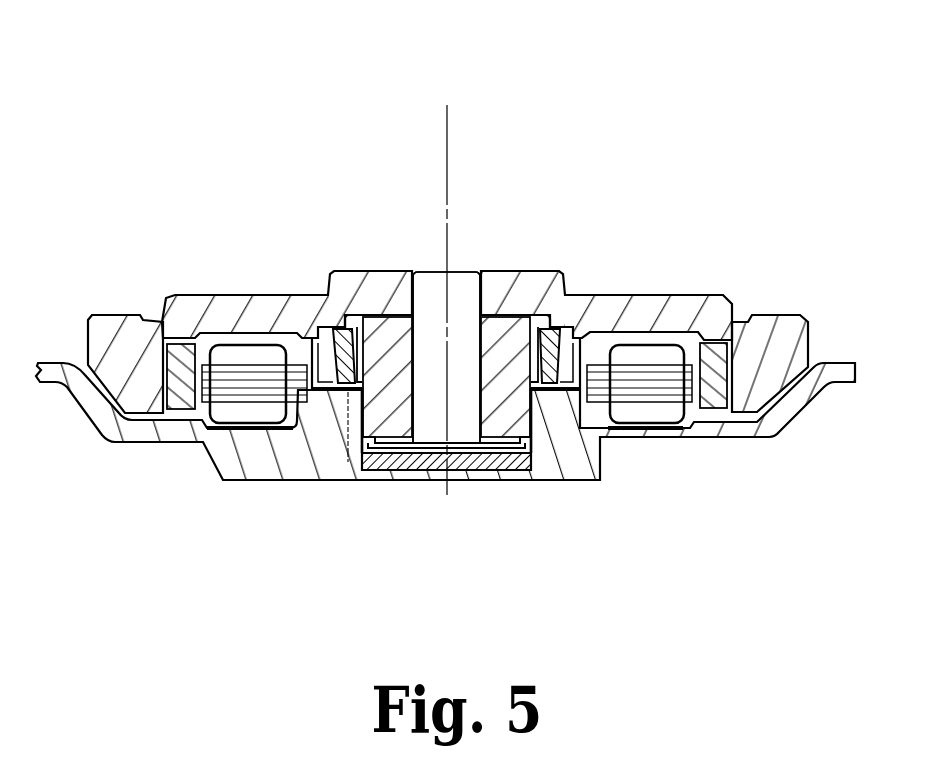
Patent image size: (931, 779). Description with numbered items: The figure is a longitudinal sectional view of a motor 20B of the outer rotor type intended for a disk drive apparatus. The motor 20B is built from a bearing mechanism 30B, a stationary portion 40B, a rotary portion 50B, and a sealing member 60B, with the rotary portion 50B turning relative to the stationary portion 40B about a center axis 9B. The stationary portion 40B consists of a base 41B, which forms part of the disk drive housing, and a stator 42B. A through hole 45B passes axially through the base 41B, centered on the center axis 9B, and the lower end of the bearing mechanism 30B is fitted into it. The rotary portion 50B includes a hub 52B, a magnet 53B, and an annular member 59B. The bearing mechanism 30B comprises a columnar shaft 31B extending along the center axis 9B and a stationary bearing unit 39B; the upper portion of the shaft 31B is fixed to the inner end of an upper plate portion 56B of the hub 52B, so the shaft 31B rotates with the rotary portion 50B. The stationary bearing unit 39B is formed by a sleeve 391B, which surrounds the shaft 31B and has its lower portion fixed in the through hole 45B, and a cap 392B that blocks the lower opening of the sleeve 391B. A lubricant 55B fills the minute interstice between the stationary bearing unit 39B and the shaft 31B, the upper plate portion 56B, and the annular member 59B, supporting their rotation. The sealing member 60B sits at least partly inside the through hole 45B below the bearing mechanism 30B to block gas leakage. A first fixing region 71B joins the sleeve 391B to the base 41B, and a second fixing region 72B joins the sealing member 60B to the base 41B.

The motor 20B is at (503, 107).
The center axis 9B is at (447, 127).
The rotary portion 50B is at (100, 183).
The hub 52B is at (235, 307).
The magnet 53B is at (183, 347).
The upper plate portion 56B is at (362, 283).
The annular member 59B is at (318, 317).
The lubricant 55B is at (385, 318).
The through hole 45B is at (458, 395).
The bearing mechanism 30B is at (390, 591).
The stationary bearing unit 39B is at (358, 555).
The sleeve 391B is at (370, 445).
The cap 392B is at (393, 447).
The shaft 31B is at (458, 423).
The sealing member 60B is at (527, 443).
The stationary portion 40B is at (785, 203).
The base 41B is at (705, 428).
The stator 42B is at (658, 357).
The first fixing region 71B is at (340, 420).
The second fixing region 72B is at (340, 460).